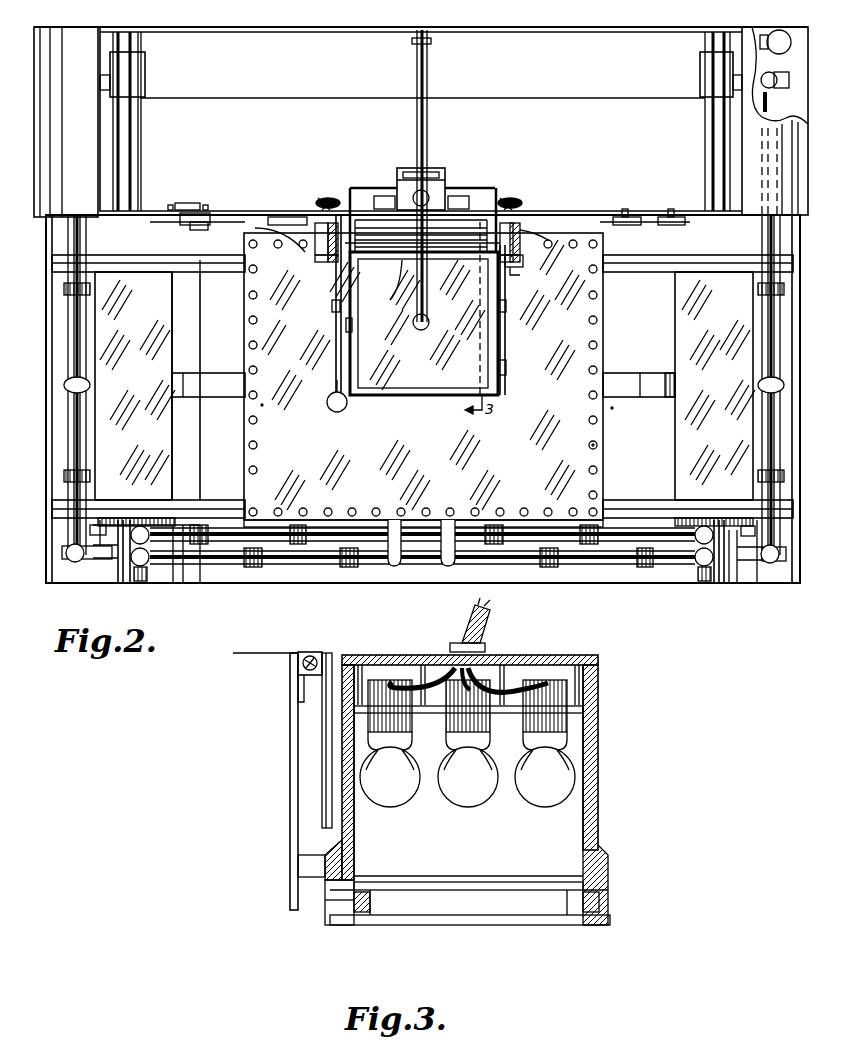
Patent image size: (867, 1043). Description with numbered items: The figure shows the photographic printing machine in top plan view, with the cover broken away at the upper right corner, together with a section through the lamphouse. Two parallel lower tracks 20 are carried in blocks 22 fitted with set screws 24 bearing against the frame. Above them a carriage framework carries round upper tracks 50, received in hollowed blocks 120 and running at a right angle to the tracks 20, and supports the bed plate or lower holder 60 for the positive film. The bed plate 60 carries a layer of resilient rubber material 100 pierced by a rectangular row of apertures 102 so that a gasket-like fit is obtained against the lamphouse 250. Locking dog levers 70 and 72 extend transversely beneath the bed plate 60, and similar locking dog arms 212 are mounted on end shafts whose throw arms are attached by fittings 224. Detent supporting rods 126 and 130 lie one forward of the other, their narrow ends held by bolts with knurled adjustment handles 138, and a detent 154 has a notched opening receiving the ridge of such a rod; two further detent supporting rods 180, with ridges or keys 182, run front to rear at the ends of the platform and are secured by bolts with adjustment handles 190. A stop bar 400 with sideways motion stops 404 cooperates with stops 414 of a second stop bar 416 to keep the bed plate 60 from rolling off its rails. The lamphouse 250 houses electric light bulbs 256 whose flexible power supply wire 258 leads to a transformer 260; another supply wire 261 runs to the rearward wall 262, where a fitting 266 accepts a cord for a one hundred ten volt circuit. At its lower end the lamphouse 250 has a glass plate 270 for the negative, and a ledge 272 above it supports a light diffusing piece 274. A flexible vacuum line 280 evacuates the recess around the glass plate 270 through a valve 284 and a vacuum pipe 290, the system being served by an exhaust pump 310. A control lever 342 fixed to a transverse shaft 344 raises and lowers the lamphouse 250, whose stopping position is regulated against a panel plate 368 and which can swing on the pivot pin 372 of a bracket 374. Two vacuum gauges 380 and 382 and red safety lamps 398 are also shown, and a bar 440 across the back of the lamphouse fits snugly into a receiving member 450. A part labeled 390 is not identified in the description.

In FIG. 2, the lower tracks 20 is at (141, 165).
In FIG. 2, the blocks 22 is at (145, 72).
In FIG. 2, the set screws 24 is at (120, 583).
In FIG. 2, the upper tracks 50 is at (200, 272).
In FIG. 2, the bed plate 60 is at (605, 330).
In FIG. 2, the locking dog lever 70 is at (392, 568).
In FIG. 2, the locking dog lever 72 is at (448, 568).
In FIG. 2, the layer of resilient material 100 is at (597, 446).
In FIG. 2, the apertures 102 is at (597, 430).
In FIG. 2, the blocks 120 is at (138, 272).
In FIG. 2, the detent supporting rod 126 is at (590, 560).
In FIG. 2, the detent supporting rod 130 is at (665, 565).
In FIG. 2, the knurled adjustment handles 138 is at (138, 566).
In FIG. 2, the detent 154 is at (340, 568).
In FIG. 2, the detent supporting rods 180 is at (70, 338).
In FIG. 2, the ridges or keys 182 is at (87, 458).
In FIG. 2, the adjustment handles 190 is at (75, 563).
In FIG. 2, the locking dog arm 212 is at (90, 386).
In FIG. 2, the fittings 224 is at (98, 548).
In FIG. 2, the lamphouse 250 is at (421, 372).
In FIG. 3, the lamphouse 250 is at (598, 740).
In FIG. 3, the electric light bulbs 256 is at (455, 800).
In FIG. 2, the flexible power supply wire 258 is at (415, 325).
In FIG. 3, the flexible power supply wire 258 is at (485, 632).
In FIG. 2, the transformer 260 is at (445, 175).
In FIG. 2, the supply wire 261 is at (428, 78).
In FIG. 2, the rearward wall 262 is at (538, 32).
In FIG. 2, the fitting 266 is at (412, 41).
In FIG. 3, the glass plate 270 is at (445, 920).
In FIG. 3, the ledge 272 is at (370, 900).
In FIG. 3, the light diffusing piece 274 is at (445, 882).
In FIG. 2, the vacuum line 280 is at (336, 300).
In FIG. 2, the valve 284 is at (323, 198).
In FIG. 2, the vacuum pipe 290 is at (372, 188).
In FIG. 2, the exhaust pump 310 is at (523, 262).
In FIG. 2, the control lever 342 is at (335, 412).
In FIG. 2, the shaft 344 is at (395, 265).
In FIG. 3, the panel plate 368 is at (290, 773).
In FIG. 3, the pivot pin 372 is at (324, 655).
In FIG. 3, the bracket 374 is at (300, 652).
In FIG. 2, the vacuum gauge 380 is at (285, 217).
In FIG. 2, the vacuum gauge 382 is at (552, 232).
In FIG. 2, the bracket 390 is at (255, 228).
In FIG. 2, the safety lamps 398 is at (780, 32).
In FIG. 2, the stop bar 400 is at (665, 217).
In FIG. 2, the sideways motion stops 404 is at (190, 385).
In FIG. 2, the stops 414 is at (190, 203).
In FIG. 2, the second stop bar 416 is at (190, 320).
In FIG. 3, the bar 440 is at (325, 858).
In FIG. 3, the receiving member 450 is at (298, 864).